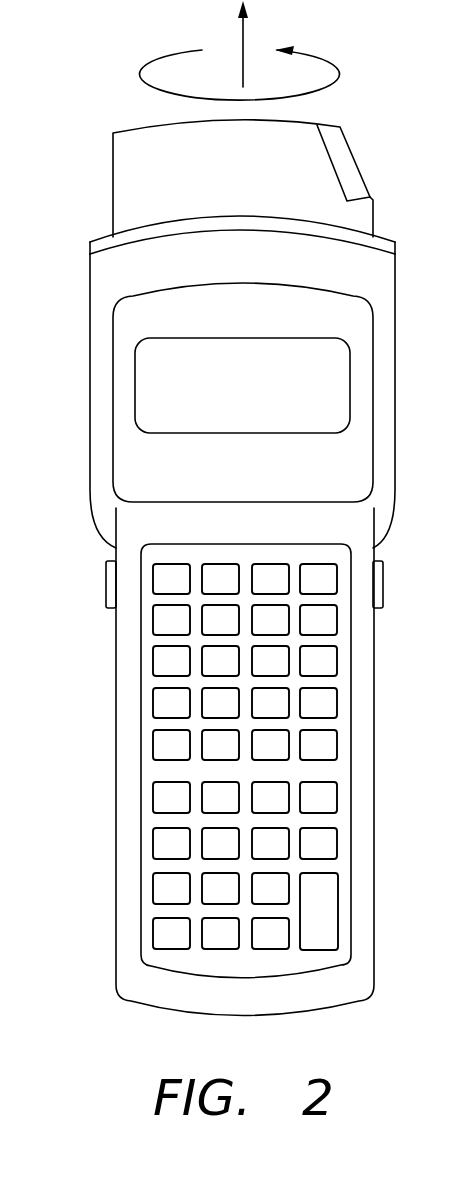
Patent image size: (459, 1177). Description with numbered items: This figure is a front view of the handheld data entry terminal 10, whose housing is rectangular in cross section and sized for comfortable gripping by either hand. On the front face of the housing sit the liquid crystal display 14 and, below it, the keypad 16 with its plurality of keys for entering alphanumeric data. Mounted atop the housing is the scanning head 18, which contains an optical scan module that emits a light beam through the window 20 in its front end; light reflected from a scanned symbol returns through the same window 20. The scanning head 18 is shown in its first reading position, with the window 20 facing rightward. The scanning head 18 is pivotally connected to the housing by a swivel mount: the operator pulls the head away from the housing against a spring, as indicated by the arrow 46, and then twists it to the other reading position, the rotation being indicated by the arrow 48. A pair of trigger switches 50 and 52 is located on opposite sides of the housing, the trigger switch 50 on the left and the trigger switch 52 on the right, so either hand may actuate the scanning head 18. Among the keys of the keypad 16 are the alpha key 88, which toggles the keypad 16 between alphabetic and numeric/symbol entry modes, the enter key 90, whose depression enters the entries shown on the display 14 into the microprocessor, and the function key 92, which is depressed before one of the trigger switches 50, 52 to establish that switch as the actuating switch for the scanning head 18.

The handheld data entry terminal 10 is at (72, 296).
The liquid crystal display 14 is at (262, 400).
The keypad 16 is at (150, 767).
The scanning head 18 is at (255, 190).
The window 20 is at (345, 160).
The arrow 46 is at (242, 35).
The arrow 48 is at (343, 72).
The trigger switch 50 is at (108, 583).
The trigger switch 52 is at (381, 585).
The alpha key 88 is at (168, 575).
The enter key 90 is at (327, 905).
The function key 92 is at (167, 620).